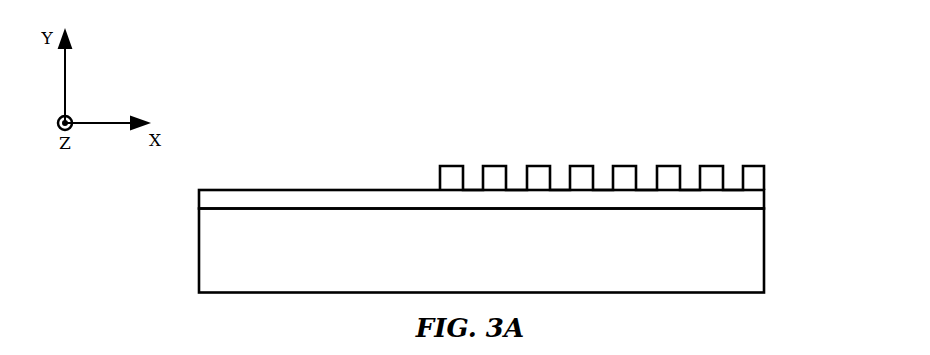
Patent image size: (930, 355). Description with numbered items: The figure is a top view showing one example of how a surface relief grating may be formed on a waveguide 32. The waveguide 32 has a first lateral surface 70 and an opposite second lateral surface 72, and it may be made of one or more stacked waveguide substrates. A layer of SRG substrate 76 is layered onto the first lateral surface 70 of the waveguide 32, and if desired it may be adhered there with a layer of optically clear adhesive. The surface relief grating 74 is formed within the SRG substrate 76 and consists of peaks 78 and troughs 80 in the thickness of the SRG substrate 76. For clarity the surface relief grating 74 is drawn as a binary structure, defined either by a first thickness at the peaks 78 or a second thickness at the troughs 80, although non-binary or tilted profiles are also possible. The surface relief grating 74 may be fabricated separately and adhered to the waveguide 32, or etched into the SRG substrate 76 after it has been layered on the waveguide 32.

The waveguide 32 is at (757, 252).
The first lateral surface 70 is at (228, 214).
The second lateral surface 72 is at (306, 286).
The surface relief grating 74 is at (786, 158).
The SRG substrate 76 is at (757, 198).
The peaks 78 is at (492, 169).
The troughs 80 is at (560, 170).